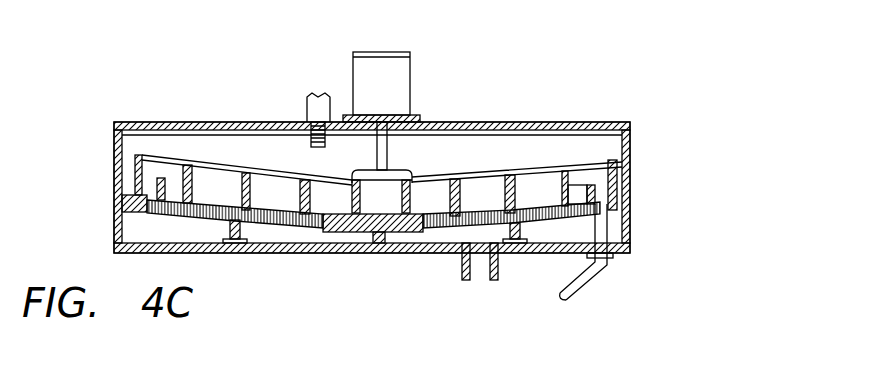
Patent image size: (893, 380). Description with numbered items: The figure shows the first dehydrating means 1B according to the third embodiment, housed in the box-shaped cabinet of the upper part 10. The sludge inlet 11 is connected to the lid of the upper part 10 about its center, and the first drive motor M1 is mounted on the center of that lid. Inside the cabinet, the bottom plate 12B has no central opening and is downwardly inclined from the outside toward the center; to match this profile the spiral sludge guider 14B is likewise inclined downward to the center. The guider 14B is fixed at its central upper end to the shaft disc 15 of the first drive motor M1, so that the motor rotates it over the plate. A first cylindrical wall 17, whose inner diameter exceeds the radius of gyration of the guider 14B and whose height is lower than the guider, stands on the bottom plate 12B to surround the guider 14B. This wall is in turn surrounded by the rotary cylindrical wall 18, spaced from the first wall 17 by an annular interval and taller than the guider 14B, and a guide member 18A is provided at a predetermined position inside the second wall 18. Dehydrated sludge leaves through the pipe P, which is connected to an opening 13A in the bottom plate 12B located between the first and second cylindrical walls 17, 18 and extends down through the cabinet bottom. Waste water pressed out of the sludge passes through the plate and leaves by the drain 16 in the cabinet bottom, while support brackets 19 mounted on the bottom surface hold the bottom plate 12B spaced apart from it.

The upper part 10 is at (668, 184).
The sludge inlet 11 is at (312, 122).
The bottom plate 12B is at (623, 215).
The opening 13A is at (598, 207).
The sludge guider 14B is at (537, 187).
The shaft disc 15 is at (385, 170).
The drain 16 is at (480, 275).
The first cylindrical wall 17 is at (165, 185).
The rotary cylindrical wall 18 is at (135, 163).
The guide member 18A is at (152, 170).
The support bracket 19 is at (524, 228).
The first dehydrating means 1B is at (485, 162).
The first drive motor M1 is at (400, 76).
The pipe P is at (600, 265).